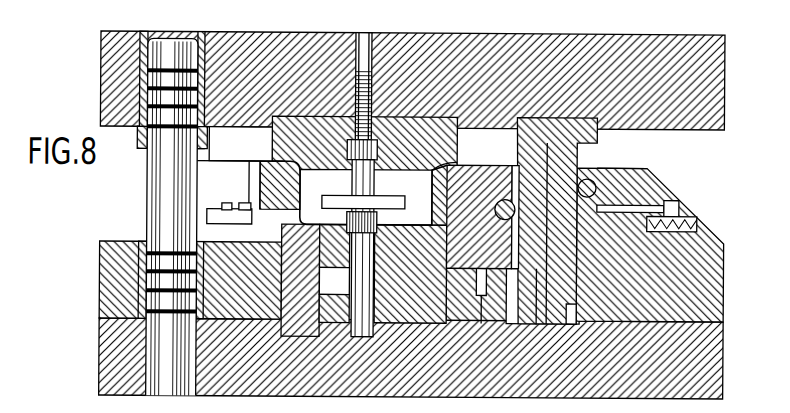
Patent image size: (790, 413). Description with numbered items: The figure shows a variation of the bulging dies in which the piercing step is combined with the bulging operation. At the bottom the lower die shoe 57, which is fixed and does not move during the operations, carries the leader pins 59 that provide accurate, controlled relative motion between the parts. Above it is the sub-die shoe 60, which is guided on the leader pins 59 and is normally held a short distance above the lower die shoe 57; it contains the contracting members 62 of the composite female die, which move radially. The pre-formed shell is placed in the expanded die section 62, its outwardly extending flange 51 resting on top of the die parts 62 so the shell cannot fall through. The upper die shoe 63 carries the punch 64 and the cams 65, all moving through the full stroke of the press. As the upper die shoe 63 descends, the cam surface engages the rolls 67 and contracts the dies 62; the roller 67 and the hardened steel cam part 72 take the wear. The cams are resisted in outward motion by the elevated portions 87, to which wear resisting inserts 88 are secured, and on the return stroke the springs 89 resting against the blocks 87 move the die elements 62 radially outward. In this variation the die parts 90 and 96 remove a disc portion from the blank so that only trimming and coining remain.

The outwardly extending flange 51 is at (275, 151).
The lower die shoe 57 is at (100, 343).
The leader pins 59 is at (185, 184).
The sub-die shoe 60 is at (93, 263).
The contracting members 62 is at (482, 216).
The upper die shoe 63 is at (702, 77).
The punch 64 is at (359, 170).
The cams 65 is at (584, 142).
The rolls 67 is at (499, 189).
The cam part 72 is at (526, 258).
The elevated portions 87 is at (652, 188).
The wear resisting inserts 88 is at (598, 153).
The springs 89 is at (690, 208).
The die part 90 is at (262, 190).
The die part 96 is at (333, 200).